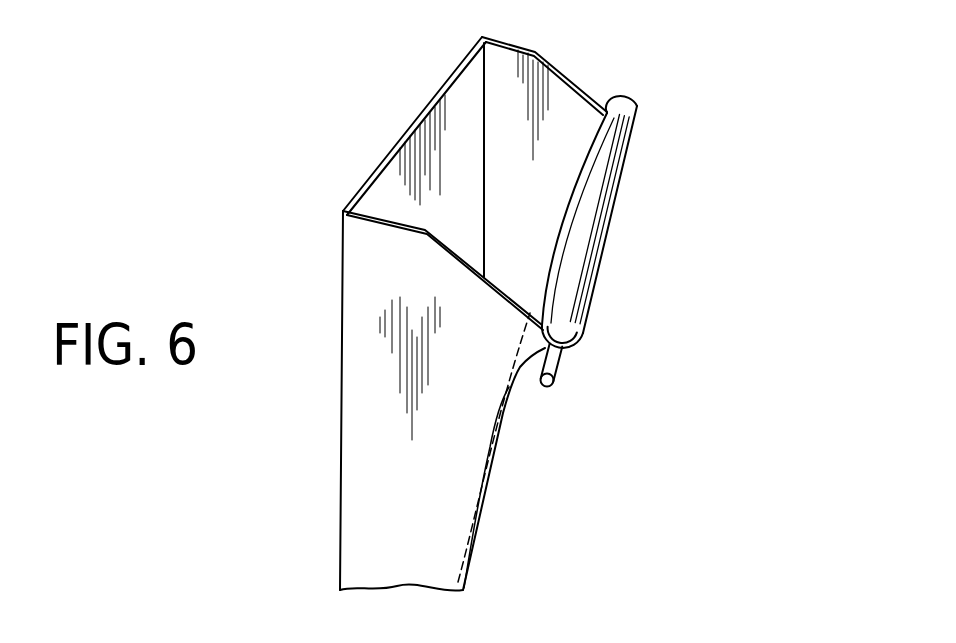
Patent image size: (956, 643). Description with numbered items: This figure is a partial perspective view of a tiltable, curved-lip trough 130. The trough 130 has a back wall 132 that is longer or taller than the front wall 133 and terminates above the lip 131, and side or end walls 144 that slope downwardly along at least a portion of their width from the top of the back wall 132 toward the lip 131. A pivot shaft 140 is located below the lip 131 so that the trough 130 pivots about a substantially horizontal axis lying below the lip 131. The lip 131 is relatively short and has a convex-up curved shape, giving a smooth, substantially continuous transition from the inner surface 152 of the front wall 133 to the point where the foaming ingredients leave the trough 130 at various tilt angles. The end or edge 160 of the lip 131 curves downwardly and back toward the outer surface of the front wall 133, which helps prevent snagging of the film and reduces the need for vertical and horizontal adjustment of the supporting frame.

The trough 130 is at (399, 122).
The lip 131 is at (634, 222).
The back wall 132 is at (380, 197).
The front wall 133 is at (480, 478).
The pivot shaft 140 is at (560, 373).
The side or end walls 144 is at (572, 108).
The inner surface 152 is at (575, 193).
The end or edge 160 is at (590, 284).